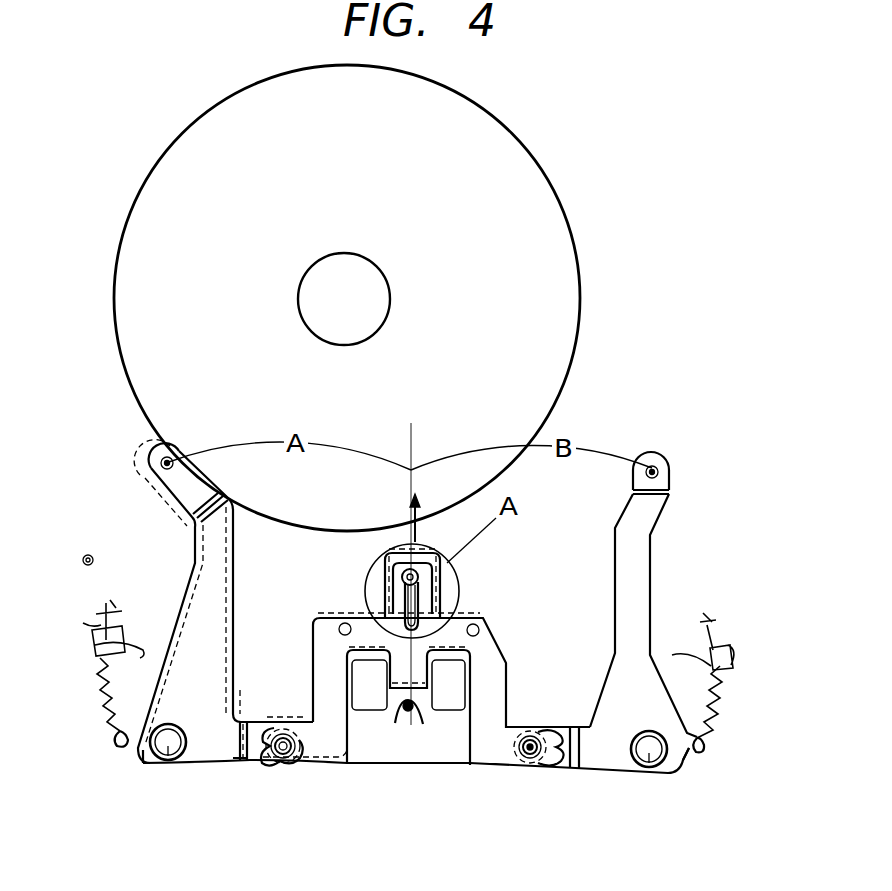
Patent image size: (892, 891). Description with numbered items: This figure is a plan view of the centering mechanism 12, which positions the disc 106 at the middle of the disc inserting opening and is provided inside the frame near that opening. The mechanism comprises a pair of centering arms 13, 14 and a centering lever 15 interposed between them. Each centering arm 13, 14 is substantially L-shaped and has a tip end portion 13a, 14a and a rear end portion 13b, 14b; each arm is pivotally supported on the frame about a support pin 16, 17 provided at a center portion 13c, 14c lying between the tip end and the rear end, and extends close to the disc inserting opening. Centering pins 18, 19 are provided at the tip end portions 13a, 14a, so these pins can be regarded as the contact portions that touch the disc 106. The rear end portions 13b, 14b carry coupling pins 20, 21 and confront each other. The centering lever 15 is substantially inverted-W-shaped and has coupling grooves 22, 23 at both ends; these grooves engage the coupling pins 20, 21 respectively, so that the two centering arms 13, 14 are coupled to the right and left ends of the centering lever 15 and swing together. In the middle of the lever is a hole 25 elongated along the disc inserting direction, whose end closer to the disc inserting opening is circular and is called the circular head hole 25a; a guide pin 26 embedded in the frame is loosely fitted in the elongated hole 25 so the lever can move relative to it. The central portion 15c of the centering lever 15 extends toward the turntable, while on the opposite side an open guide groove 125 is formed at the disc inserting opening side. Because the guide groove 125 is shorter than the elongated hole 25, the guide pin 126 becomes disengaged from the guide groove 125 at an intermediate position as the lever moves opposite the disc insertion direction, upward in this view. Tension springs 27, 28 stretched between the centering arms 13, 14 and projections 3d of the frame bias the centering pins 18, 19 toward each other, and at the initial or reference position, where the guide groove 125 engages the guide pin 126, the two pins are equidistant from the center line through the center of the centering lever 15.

The disc 106 is at (579, 303).
The centering mechanism 12 is at (437, 797).
The centering arm 13 is at (200, 548).
The tip end portion 13a is at (175, 483).
The rear end portion 13b is at (250, 750).
The center portion 13c is at (160, 710).
The centering arm 14 is at (653, 542).
The tip end portion 14a is at (653, 511).
The rear end portion 14b is at (568, 760).
The center portion 14c is at (663, 727).
The centering lever 15 is at (480, 740).
The central portion 15c is at (396, 542).
The support pin 16 is at (169, 750).
The support pin 17 is at (649, 768).
The centering pin 18 is at (160, 463).
The centering pin 19 is at (668, 474).
The coupling pin 20 is at (283, 762).
The coupling pin 21 is at (530, 757).
The coupling groove 22 is at (253, 740).
The coupling groove 23 is at (560, 728).
The elongated hole 25 is at (400, 612).
The circular head hole 25a is at (428, 578).
The guide pin 26 is at (401, 573).
The tension spring 27 is at (93, 696).
The tension spring 28 is at (723, 707).
The projection 3d is at (94, 620).
The guide groove 125 is at (421, 725).
The guide pin 126 is at (405, 716).